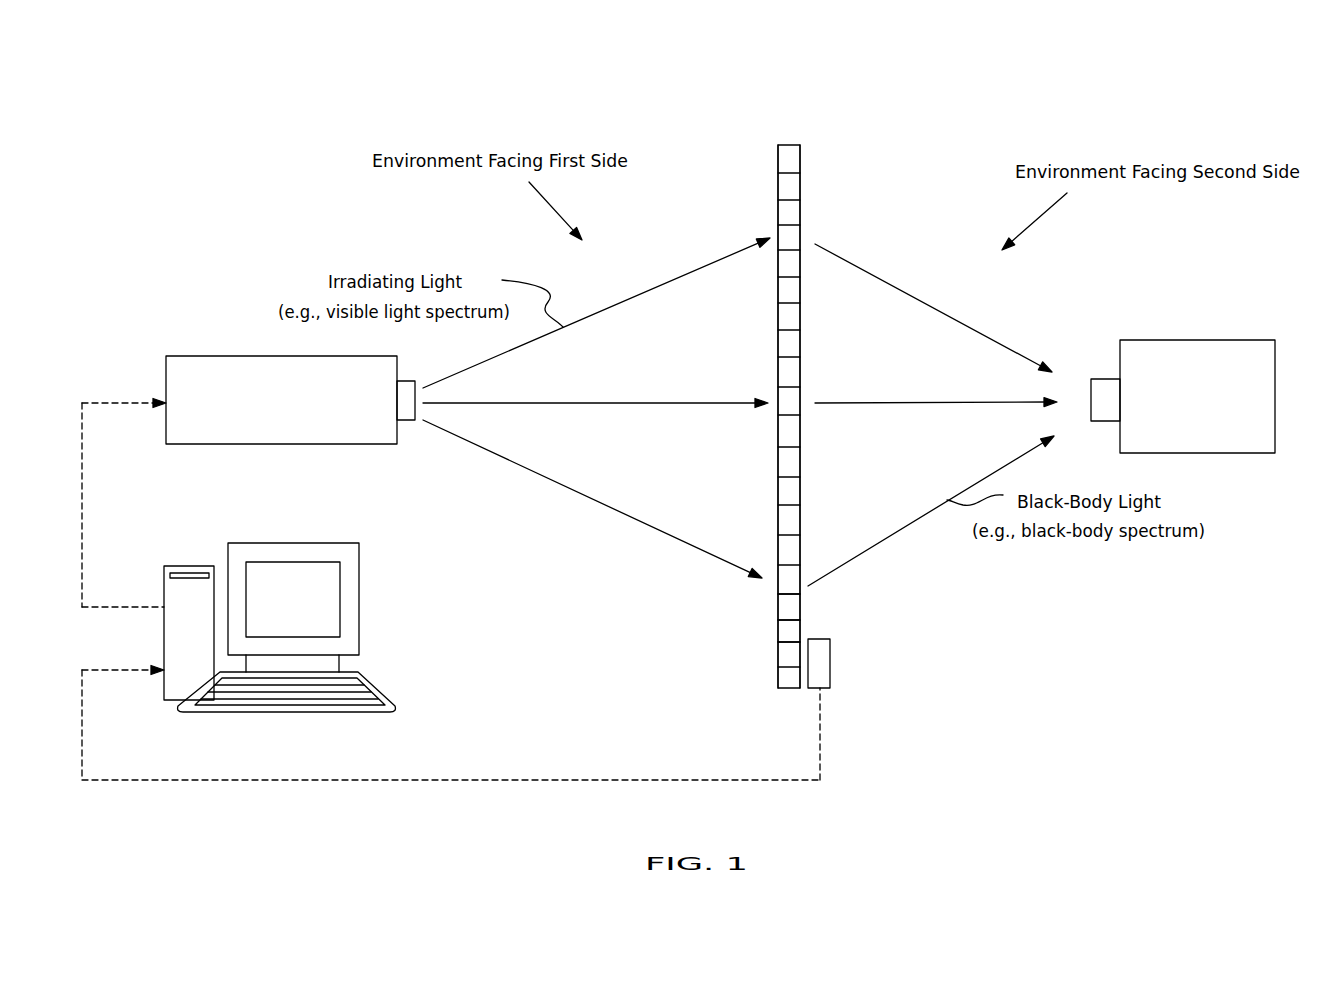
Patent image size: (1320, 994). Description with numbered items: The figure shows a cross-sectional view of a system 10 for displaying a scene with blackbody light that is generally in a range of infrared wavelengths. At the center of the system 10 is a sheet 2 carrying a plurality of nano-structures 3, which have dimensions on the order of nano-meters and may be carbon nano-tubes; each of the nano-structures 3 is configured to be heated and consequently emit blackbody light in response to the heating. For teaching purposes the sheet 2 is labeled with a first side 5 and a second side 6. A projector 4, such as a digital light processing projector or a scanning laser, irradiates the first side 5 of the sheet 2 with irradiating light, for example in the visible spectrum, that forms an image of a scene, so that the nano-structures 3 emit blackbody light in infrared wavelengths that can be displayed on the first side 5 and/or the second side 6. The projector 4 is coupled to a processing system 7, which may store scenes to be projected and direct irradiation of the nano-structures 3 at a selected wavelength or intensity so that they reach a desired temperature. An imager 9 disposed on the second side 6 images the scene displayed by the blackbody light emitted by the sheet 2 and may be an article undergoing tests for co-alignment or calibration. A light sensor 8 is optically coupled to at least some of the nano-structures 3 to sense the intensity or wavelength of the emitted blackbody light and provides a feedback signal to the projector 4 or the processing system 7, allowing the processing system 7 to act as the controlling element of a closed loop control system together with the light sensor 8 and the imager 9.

The system 10 is at (256, 110).
The sheet 2 is at (785, 706).
The nano-structures 3 is at (780, 587).
The projector 4 is at (335, 412).
The first side 5 is at (731, 201).
The second side 6 is at (851, 202).
The processing system 7 is at (190, 568).
The light sensor 8 is at (830, 653).
The imager 9 is at (1235, 409).